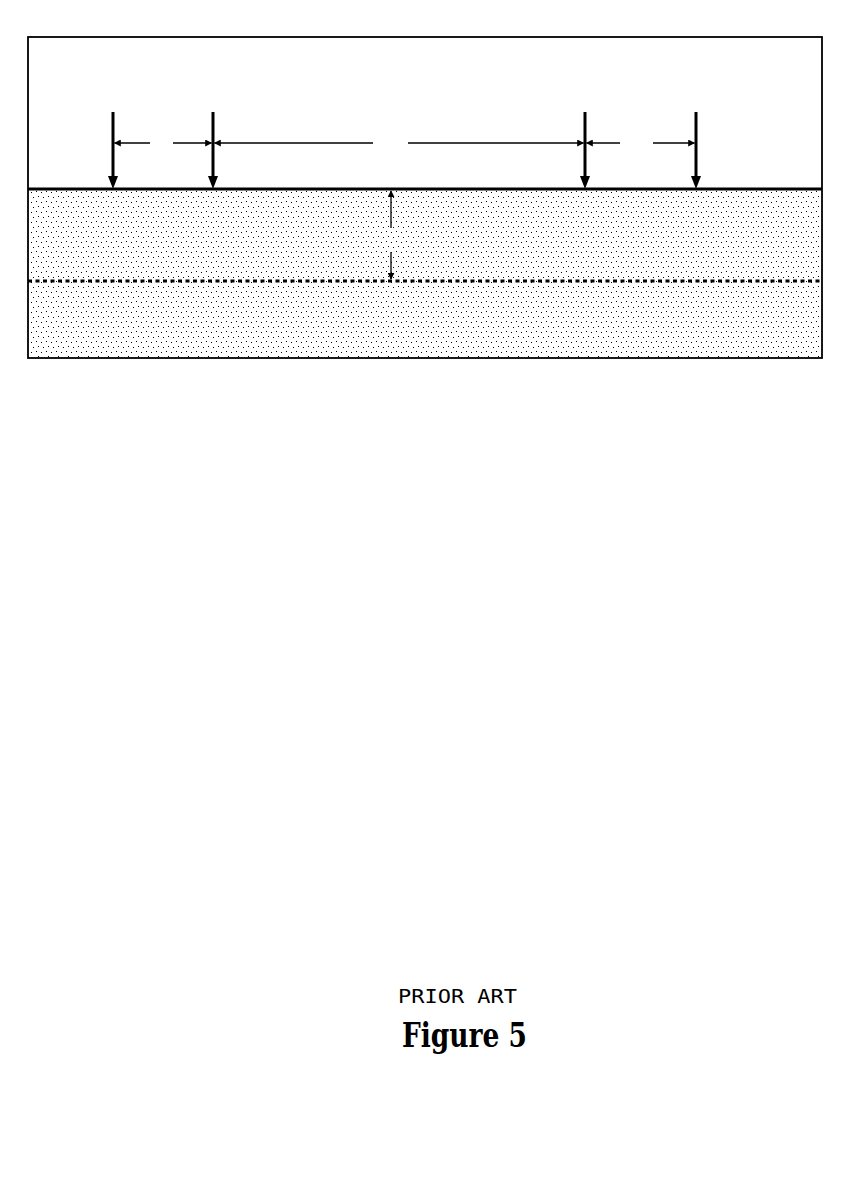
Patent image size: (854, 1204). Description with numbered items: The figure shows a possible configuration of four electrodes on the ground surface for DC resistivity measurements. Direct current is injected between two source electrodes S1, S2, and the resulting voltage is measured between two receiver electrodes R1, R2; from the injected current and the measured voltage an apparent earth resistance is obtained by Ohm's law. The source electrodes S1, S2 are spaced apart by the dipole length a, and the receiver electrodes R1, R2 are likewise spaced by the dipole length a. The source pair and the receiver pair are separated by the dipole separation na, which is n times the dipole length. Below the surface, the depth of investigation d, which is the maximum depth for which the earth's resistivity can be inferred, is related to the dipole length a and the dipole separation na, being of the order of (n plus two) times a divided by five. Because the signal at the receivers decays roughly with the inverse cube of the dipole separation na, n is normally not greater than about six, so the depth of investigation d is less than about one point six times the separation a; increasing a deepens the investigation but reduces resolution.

The source electrode S1 is at (114, 136).
The source electrode S2 is at (214, 136).
The receiver electrode R1 is at (578, 136).
The receiver electrode R2 is at (698, 136).
The dipole length a is at (405, 144).
The dipole separation na is at (399, 144).
The depth of investigation d is at (390, 235).